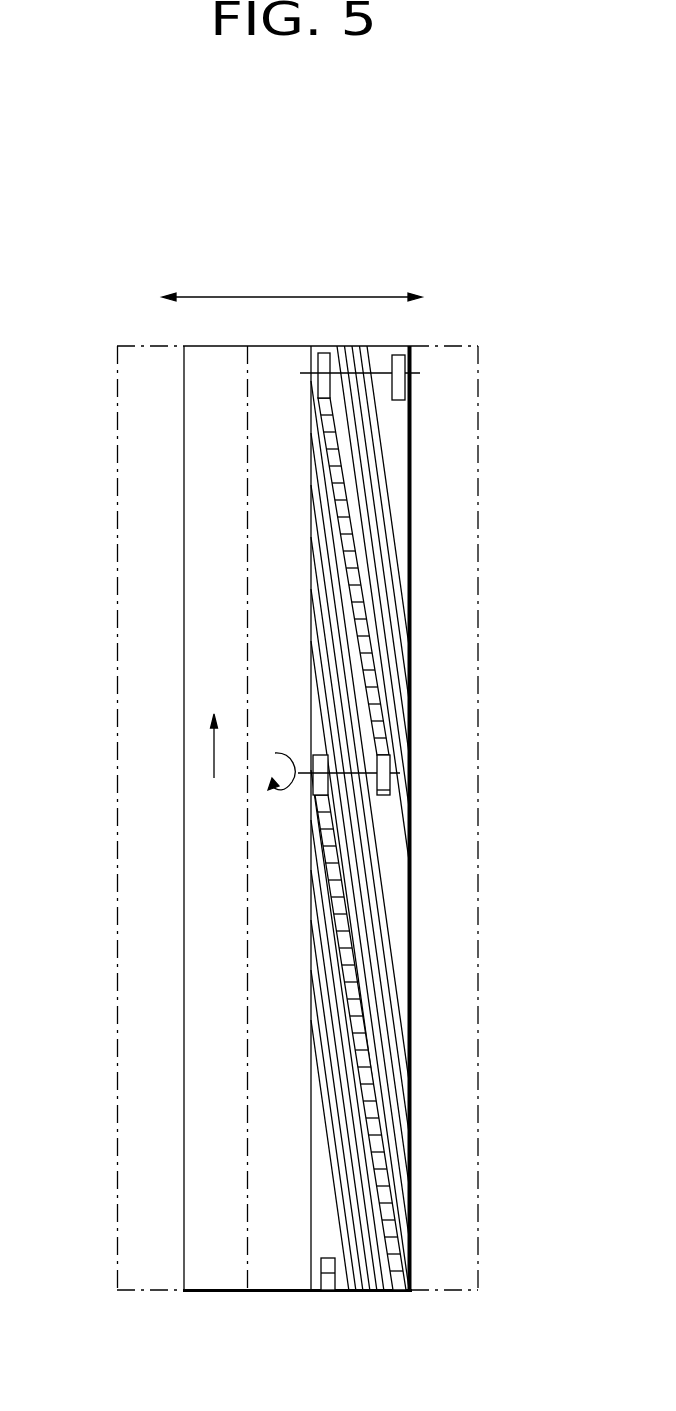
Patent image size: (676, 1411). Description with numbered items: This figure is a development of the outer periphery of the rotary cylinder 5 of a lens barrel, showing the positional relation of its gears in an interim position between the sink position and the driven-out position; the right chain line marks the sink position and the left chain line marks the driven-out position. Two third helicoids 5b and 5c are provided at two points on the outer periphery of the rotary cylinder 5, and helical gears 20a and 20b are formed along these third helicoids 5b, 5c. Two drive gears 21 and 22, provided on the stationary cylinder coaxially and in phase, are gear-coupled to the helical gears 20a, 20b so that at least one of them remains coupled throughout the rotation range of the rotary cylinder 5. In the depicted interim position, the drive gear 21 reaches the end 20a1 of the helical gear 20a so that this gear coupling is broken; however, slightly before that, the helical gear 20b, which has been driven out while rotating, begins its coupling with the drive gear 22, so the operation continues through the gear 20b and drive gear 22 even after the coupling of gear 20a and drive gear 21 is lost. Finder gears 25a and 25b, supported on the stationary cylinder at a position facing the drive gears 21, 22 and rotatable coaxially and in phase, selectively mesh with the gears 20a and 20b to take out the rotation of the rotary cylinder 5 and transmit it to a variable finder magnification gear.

The rotary cylinder 5 is at (185, 530).
The third helicoid 5b is at (382, 512).
The third helicoid 5c is at (395, 1025).
The helical gear 20a is at (375, 692).
The end of the gear 20a 20a1 is at (385, 757).
The helical gear 20b is at (398, 1286).
The drive gear 21 is at (385, 795).
The drive gear 22 is at (313, 787).
The finder gear 25a is at (401, 360).
The finder gear 25b is at (323, 360).